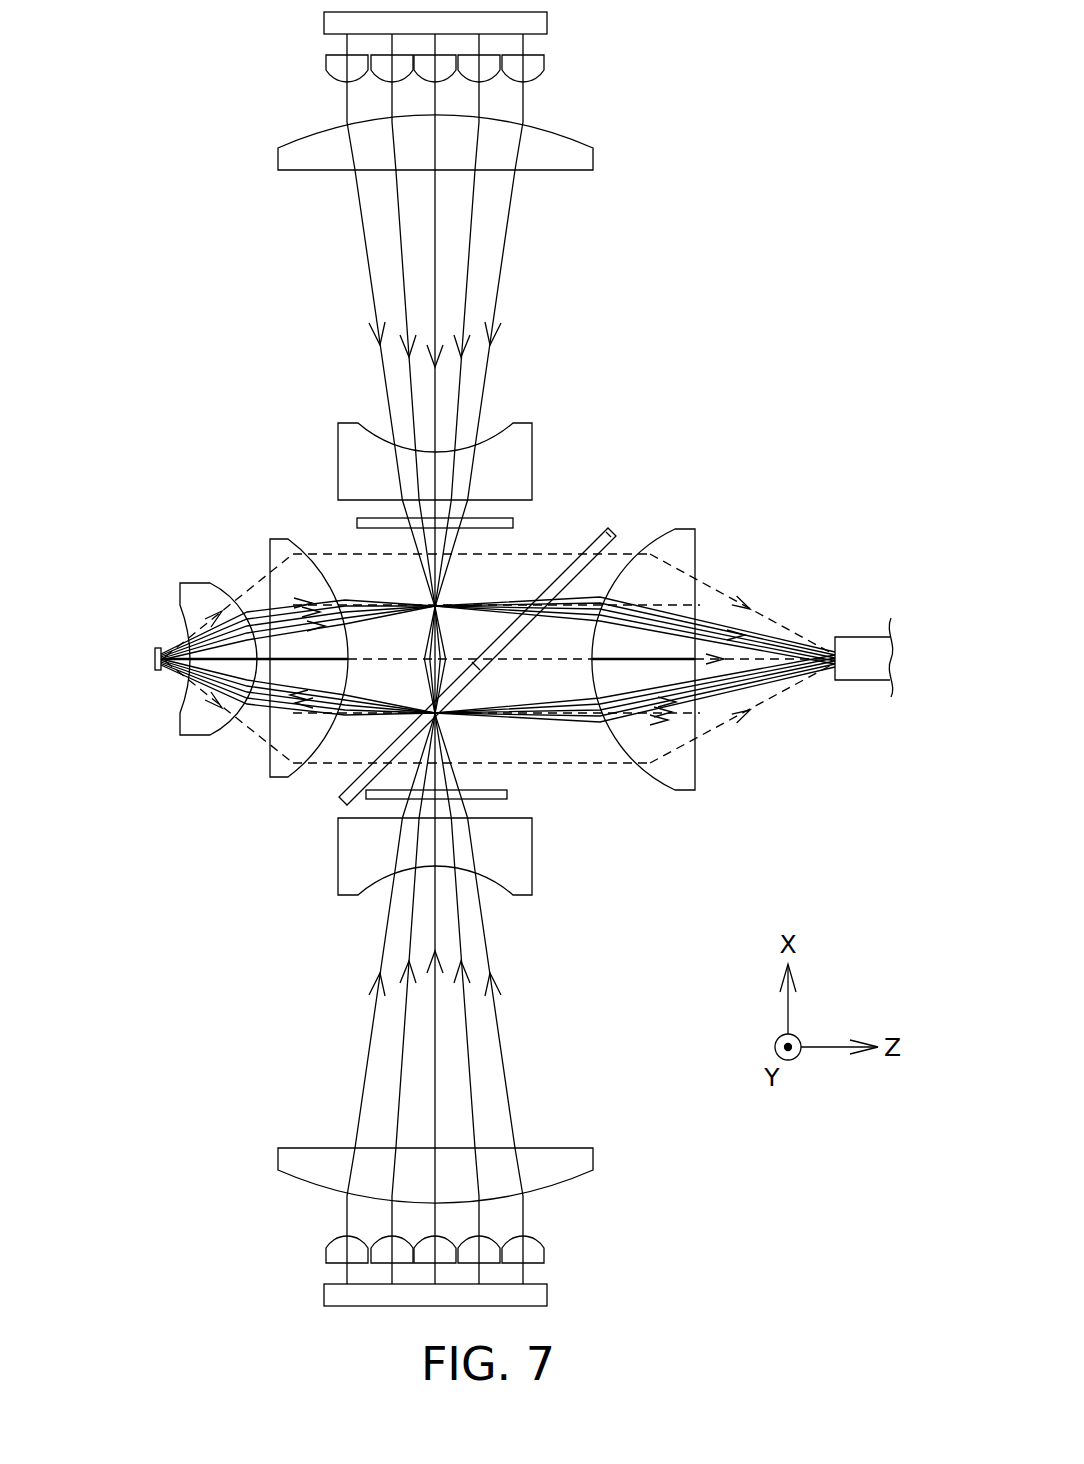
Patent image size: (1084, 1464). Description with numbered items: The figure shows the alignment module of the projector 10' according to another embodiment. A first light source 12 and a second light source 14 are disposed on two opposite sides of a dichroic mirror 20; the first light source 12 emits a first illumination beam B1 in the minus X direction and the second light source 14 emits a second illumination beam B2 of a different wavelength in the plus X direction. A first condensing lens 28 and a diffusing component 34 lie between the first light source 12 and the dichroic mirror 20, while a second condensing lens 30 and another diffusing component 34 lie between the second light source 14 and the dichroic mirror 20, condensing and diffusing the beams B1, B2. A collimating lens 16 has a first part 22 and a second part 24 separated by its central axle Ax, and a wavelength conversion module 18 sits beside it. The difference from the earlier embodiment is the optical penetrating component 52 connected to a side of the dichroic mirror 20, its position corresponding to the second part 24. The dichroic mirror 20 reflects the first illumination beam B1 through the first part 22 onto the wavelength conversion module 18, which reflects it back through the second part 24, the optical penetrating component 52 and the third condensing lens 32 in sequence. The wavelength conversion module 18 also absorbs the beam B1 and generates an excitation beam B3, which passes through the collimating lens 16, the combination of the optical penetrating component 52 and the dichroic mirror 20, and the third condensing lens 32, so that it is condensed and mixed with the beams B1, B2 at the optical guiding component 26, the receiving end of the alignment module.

The projector 10' is at (815, 45).
The first light source 12 is at (530, 64).
The second light source 14 is at (530, 1254).
The collimating lens 16 is at (264, 653).
The wavelength conversion module 18 is at (153, 657).
The dichroic mirror 20 is at (338, 804).
The first part 22 is at (276, 768).
The second part 24 is at (279, 543).
The optical guiding component 26 is at (863, 652).
The first condensing lens 28 is at (573, 165).
The second condensing lens 30 is at (573, 1152).
The third condensing lens 32 is at (680, 771).
The diffusing component 34 is at (511, 524).
The optical penetrating component 52 is at (608, 530).
The central axle Ax is at (334, 657).
The first illumination beam B1 is at (503, 246).
The second illumination beam B2 is at (503, 1071).
The excitation beam B3 is at (786, 619).